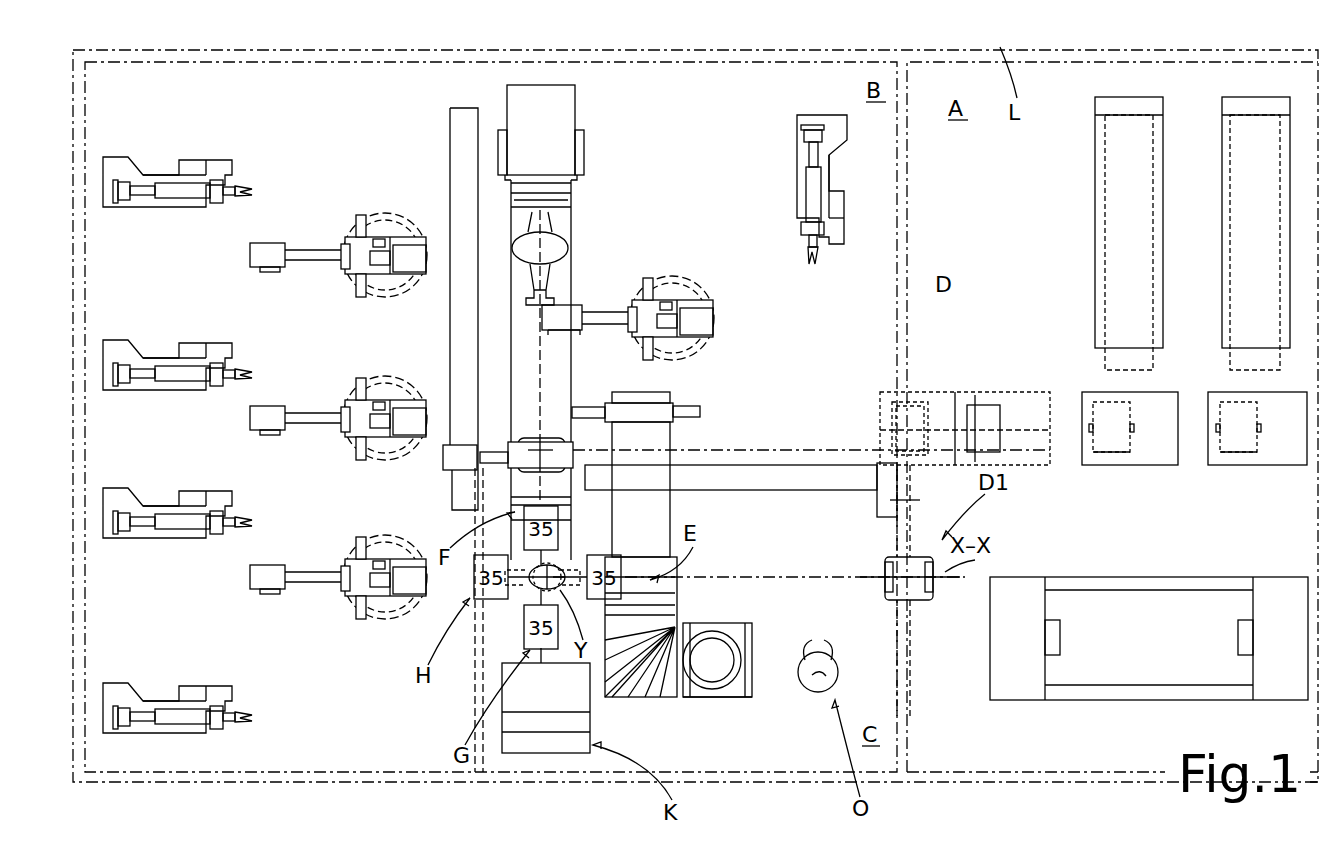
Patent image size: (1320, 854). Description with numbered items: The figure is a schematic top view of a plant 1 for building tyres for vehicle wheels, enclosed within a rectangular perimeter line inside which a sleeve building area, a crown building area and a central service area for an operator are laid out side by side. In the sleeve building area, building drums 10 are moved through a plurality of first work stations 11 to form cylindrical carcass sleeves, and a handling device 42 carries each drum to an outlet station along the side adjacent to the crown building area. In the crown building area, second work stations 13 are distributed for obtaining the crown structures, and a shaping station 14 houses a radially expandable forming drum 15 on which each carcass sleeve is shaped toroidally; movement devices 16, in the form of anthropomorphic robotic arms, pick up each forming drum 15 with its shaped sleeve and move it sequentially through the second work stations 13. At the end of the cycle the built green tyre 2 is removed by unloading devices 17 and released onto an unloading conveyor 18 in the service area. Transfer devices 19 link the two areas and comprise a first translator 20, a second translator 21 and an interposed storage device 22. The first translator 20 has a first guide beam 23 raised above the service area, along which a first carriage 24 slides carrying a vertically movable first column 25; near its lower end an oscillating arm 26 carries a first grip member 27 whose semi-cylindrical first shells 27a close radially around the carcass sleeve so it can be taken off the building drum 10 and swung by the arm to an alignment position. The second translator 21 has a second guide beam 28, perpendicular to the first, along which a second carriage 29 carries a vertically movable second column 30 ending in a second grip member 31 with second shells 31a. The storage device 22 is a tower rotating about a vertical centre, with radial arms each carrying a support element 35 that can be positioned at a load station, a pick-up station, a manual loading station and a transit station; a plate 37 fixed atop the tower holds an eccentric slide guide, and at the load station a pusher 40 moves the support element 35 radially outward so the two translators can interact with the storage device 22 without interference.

The plant for building tyres 1 is at (419, 171).
The built green tyre 2 is at (725, 690).
The building drum 10 is at (940, 392).
The first work stations 11 is at (1180, 169).
The second work stations 13 is at (257, 154).
The shaping station 14 is at (572, 292).
The forming drum 15 is at (553, 250).
The movement devices 16 is at (345, 245).
The unloading devices 17 is at (680, 412).
The unloading conveyor 18 is at (745, 685).
The transfer devices 19 is at (444, 439).
The first translator 20 is at (784, 499).
The second translator 21 is at (444, 134).
The storage device 22 is at (508, 603).
The first guide beam 23 is at (755, 480).
The first carriage 24 is at (885, 478).
The first column 25 is at (885, 505).
The oscillating arm 26 is at (910, 490).
The first grip member 27 is at (890, 590).
The first shells 27a is at (918, 600).
The second guide beam 28 is at (465, 205).
The second carriage 29 is at (453, 462).
The second column 30 is at (468, 410).
The second grip member 31 is at (525, 455).
The second shells 31a is at (522, 440).
The support element 35 is at (547, 584).
The plate 37 is at (553, 568).
The pusher 40 is at (558, 577).
The handling device 42 is at (968, 395).